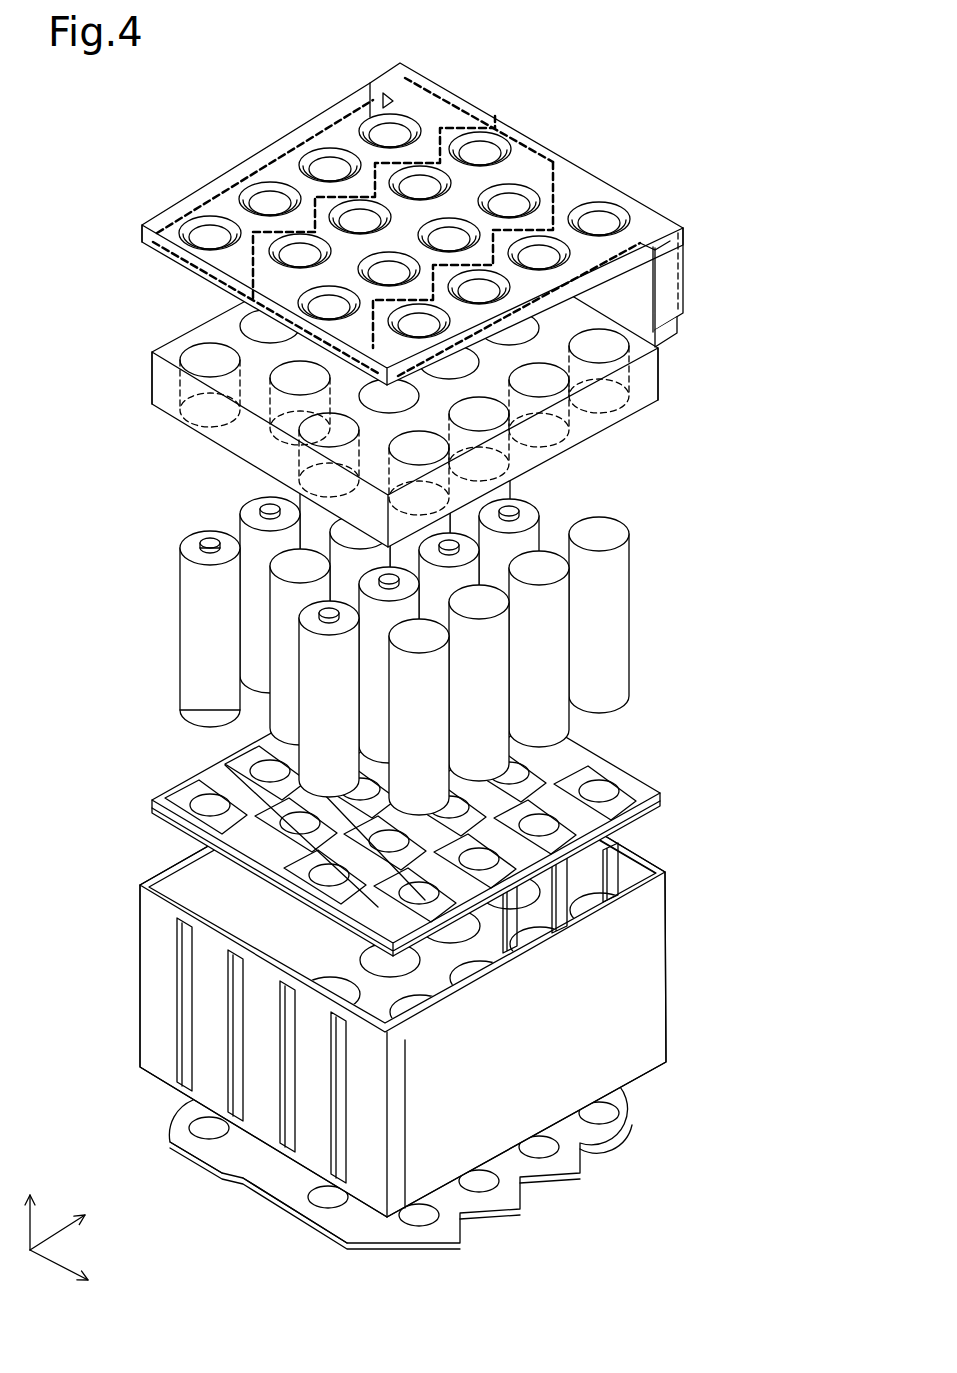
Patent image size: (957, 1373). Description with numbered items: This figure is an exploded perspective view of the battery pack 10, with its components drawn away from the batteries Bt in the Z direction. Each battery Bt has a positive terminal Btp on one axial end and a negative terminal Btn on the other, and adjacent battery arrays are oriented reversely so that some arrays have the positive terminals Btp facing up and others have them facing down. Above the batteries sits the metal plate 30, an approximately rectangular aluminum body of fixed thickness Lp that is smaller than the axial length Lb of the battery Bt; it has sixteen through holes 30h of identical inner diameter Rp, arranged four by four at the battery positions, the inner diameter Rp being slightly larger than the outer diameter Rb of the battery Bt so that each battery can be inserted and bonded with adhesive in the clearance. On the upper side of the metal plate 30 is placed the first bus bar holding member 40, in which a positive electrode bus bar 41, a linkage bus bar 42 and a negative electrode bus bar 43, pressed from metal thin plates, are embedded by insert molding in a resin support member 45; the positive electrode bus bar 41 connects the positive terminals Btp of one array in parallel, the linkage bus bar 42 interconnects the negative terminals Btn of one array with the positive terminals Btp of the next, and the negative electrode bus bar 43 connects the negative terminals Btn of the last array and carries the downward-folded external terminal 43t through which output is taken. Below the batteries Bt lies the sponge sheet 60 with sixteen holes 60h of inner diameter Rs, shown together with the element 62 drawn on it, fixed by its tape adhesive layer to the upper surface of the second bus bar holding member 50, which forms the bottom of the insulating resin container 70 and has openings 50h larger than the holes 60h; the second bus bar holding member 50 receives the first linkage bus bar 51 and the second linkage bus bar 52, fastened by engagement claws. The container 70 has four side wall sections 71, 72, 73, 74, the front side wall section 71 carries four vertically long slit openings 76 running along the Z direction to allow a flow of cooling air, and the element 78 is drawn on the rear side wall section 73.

The battery pack 10 is at (754, 82).
The metal plate 30 is at (410, 376).
The through hole 30h is at (202, 352).
The first bus bar holding member 40 is at (458, 213).
The positive electrode bus bar 41 is at (445, 85).
The linkage bus bar 42 is at (467, 103).
The negative electrode bus bar 43 is at (674, 234).
The external terminal 43t is at (670, 345).
The resin support member 45 is at (645, 245).
The second bus bar holding member 50 is at (366, 1112).
The opening 50h is at (430, 1000).
The first linkage bus bar 51 is at (213, 1153).
The second linkage bus bar 52 is at (303, 1210).
The sponge sheet 60 is at (407, 803).
The hole 60h is at (607, 773).
The lower bus bar 62 is at (170, 810).
The container 70 is at (418, 971).
The front side wall section 71 is at (157, 970).
The side wall section 72 is at (652, 1022).
The rear side wall section 73 is at (637, 873).
The side wall section 74 is at (180, 895).
The opening 76 is at (183, 990).
The case slit 78 is at (618, 870).
The battery Bt is at (417, 622).
The positive terminal Btp is at (205, 548).
The negative terminal Btn is at (185, 710).
The thickness Lp is at (152, 405).
The inner diameter Rp is at (180, 362).
The length Lb is at (160, 549).
The outer diameter Rb is at (239, 632).
The inner diameter Rs is at (559, 822).